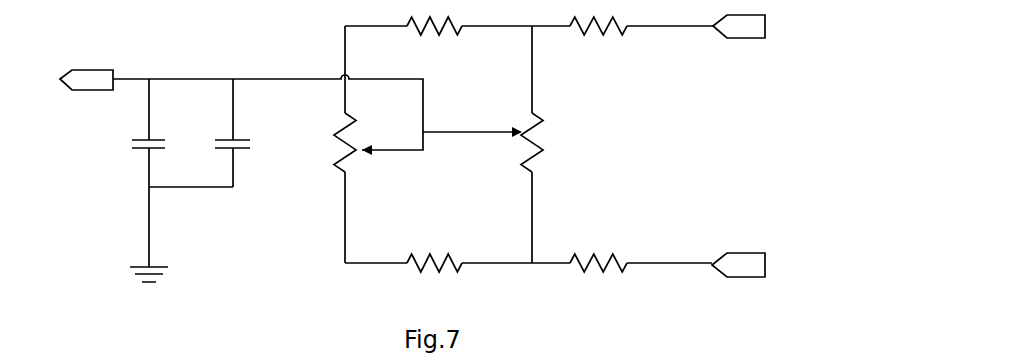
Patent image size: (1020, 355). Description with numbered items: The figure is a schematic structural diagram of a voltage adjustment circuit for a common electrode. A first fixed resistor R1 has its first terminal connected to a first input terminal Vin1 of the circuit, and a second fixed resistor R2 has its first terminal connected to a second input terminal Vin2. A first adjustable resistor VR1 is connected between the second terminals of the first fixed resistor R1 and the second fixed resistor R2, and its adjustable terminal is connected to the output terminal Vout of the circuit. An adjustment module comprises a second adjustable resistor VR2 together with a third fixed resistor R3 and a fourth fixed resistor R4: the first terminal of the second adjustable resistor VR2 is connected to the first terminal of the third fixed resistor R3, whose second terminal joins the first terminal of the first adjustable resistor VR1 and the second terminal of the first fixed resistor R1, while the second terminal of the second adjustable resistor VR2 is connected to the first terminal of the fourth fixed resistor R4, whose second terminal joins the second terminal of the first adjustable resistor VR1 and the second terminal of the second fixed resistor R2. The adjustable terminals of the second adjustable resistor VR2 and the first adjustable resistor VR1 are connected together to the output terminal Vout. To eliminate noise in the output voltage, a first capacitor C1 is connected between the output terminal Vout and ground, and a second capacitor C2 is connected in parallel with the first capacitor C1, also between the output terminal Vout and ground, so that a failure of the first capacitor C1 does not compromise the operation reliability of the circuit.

The output terminal Vout is at (86, 67).
The first input terminal Vin1 is at (759, 27).
The second input terminal Vin2 is at (759, 265).
The first capacitor C1 is at (163, 145).
The second capacitor C2 is at (247, 145).
The first adjustable resistor VR1 is at (552, 142).
The second adjustable resistor VR2 is at (322, 142).
The first fixed resistor R1 is at (598, 39).
The second fixed resistor R2 is at (598, 276).
The third fixed resistor R3 is at (434, 39).
The fourth fixed resistor R4 is at (434, 276).